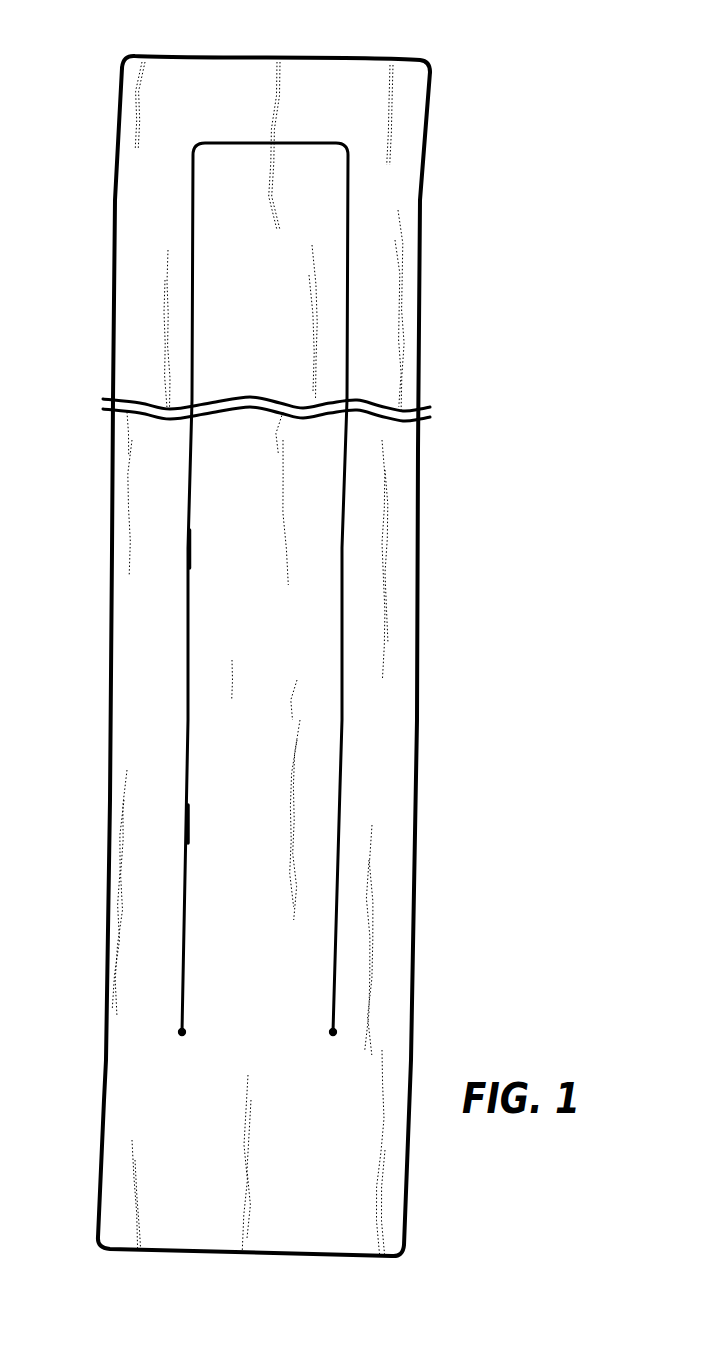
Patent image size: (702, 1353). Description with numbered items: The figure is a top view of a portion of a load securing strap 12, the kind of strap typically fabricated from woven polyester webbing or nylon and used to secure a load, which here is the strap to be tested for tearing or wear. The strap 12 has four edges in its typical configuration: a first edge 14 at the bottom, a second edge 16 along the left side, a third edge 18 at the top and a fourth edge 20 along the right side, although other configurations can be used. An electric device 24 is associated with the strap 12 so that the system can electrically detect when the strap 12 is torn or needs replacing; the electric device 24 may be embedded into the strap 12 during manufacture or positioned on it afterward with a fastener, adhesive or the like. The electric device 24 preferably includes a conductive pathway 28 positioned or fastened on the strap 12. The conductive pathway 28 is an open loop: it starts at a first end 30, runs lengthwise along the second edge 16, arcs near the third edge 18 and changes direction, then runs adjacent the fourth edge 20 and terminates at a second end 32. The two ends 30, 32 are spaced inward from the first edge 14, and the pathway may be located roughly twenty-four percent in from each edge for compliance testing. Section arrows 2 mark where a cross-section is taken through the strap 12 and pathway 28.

The section line of FIG. 2 is at (205, 548).
The strap 12 is at (261, 653).
The first edge 14 is at (240, 1254).
The second edge 16 is at (112, 648).
The third edge 18 is at (258, 53).
The fourth edge 20 is at (418, 590).
The electric device 24 is at (348, 240).
The conductive pathway 28 is at (340, 787).
The first end 30 is at (182, 1032).
The second end 32 is at (333, 1032).